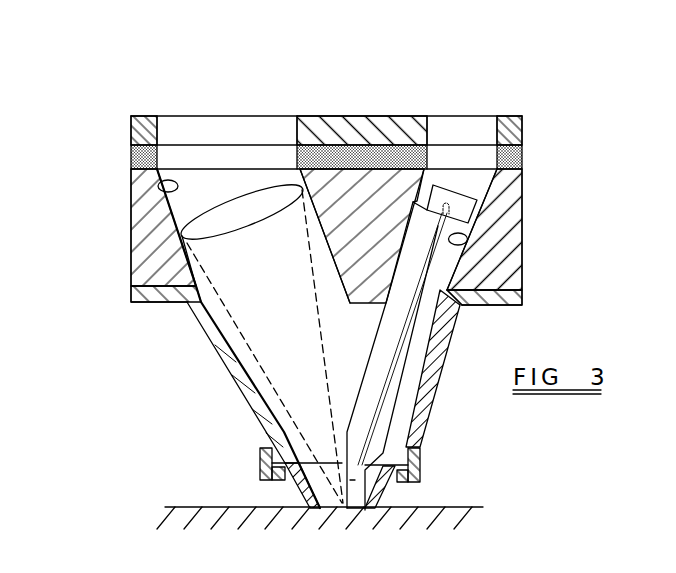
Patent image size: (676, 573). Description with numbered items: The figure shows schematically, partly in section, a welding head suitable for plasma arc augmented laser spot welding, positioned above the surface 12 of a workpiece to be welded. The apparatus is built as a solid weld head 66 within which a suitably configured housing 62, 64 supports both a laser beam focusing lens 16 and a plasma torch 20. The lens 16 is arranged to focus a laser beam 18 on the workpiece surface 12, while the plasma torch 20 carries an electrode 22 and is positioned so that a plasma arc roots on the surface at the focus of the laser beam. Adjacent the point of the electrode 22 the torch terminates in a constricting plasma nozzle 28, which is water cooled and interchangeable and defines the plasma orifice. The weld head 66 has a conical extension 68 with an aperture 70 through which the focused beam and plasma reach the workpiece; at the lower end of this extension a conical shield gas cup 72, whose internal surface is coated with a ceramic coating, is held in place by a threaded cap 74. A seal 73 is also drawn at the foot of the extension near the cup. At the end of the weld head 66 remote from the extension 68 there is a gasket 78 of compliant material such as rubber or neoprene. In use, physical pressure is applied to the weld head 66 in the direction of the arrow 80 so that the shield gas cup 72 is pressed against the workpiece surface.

The arrow 80 is at (394, 88).
The gasket 78 is at (523, 153).
The solid weld head 66 is at (112, 258).
The plasma welding torch 20 is at (443, 267).
The lens 16 is at (253, 205).
The housing 62 is at (158, 182).
The conical extension 68 is at (236, 385).
The laser beam 18 is at (240, 360).
The aperture 70 is at (327, 450).
The electrode 22 is at (412, 316).
The housing 64 is at (467, 238).
The threaded cap 74 is at (422, 466).
The left seal strip 73 is at (340, 500).
The shield gas cup 72 is at (377, 503).
The constricting plasma nozzle 28 is at (350, 512).
The workpiece surface 12 is at (191, 505).